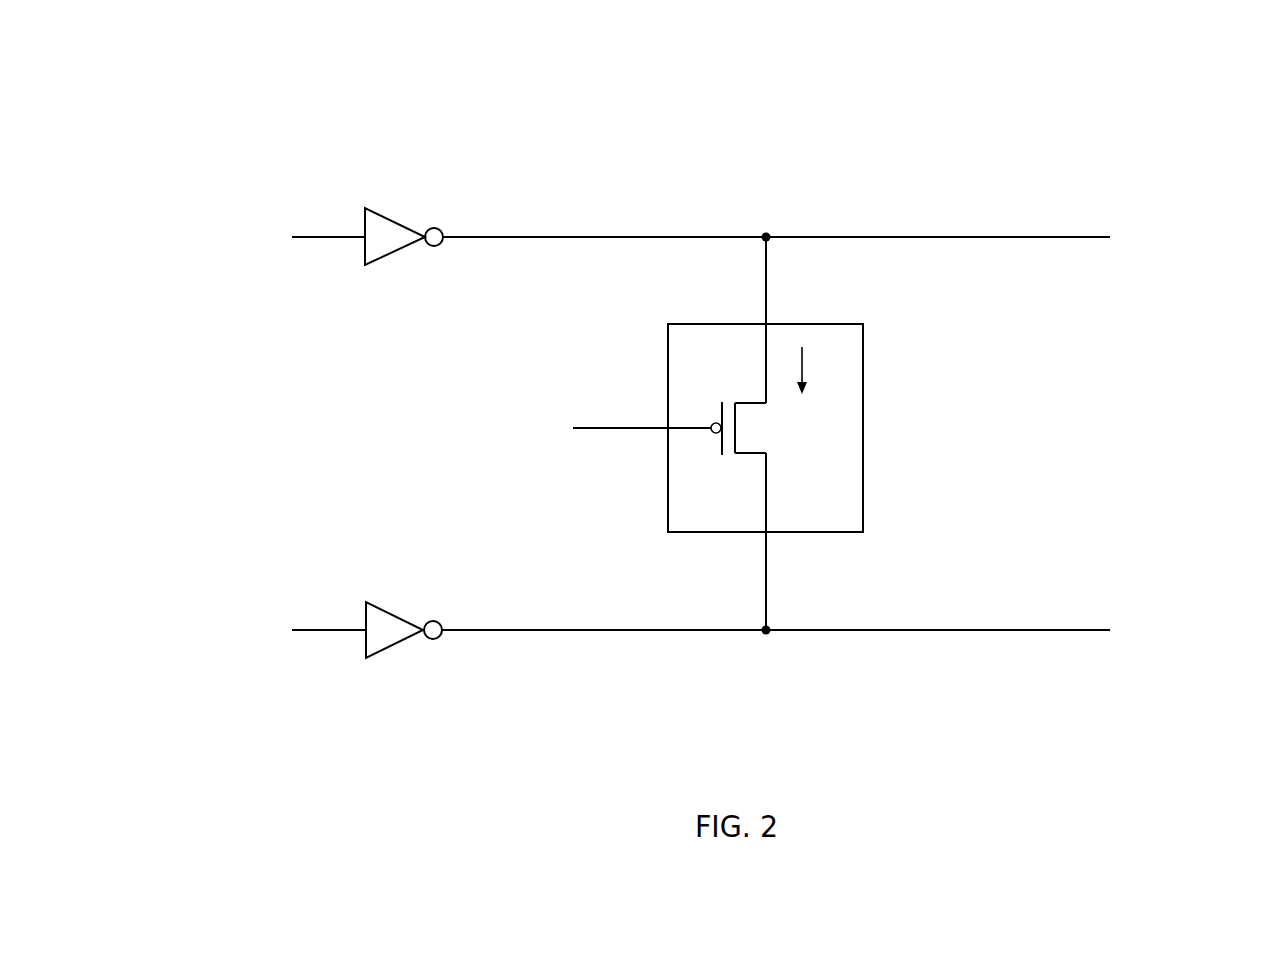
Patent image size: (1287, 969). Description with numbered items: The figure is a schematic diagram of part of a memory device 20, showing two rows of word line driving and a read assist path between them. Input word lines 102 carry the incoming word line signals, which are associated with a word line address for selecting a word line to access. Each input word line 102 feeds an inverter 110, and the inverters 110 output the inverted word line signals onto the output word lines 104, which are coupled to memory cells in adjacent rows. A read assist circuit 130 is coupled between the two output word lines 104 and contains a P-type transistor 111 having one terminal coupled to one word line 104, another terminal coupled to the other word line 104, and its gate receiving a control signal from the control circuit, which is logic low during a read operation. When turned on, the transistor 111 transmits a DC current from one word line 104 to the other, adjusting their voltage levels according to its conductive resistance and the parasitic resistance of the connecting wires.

The memory device 20 is at (146, 104).
The word line 102 is at (310, 235).
The inverter 110 is at (398, 222).
The word line 104 is at (584, 235).
The read assist circuit 130 is at (864, 428).
The P-type transistor 111 is at (757, 453).